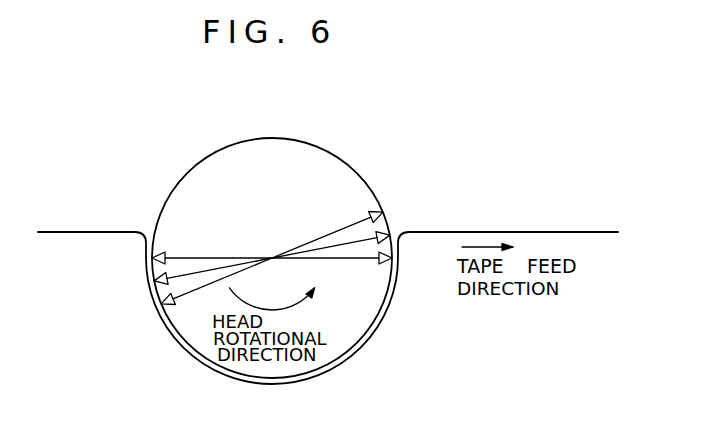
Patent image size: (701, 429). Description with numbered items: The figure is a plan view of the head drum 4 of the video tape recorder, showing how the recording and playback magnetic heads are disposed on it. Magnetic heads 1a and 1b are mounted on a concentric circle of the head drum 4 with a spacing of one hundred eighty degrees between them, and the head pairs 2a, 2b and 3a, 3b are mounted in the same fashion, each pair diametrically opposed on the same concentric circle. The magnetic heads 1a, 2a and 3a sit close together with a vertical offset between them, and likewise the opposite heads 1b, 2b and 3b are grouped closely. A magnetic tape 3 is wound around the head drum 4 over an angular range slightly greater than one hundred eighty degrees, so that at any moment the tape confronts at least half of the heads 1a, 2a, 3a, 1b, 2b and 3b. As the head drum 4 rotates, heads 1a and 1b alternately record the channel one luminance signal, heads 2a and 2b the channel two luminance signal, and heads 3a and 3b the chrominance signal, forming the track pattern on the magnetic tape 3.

The head drum 4 is at (331, 152).
The magnetic tape 3 is at (503, 230).
The magnetic head 1a is at (152, 263).
The magnetic head 1b is at (396, 255).
The magnetic head 2a is at (152, 290).
The magnetic head 2b is at (388, 228).
The magnetic head 3a is at (170, 313).
The magnetic head 3b is at (374, 206).